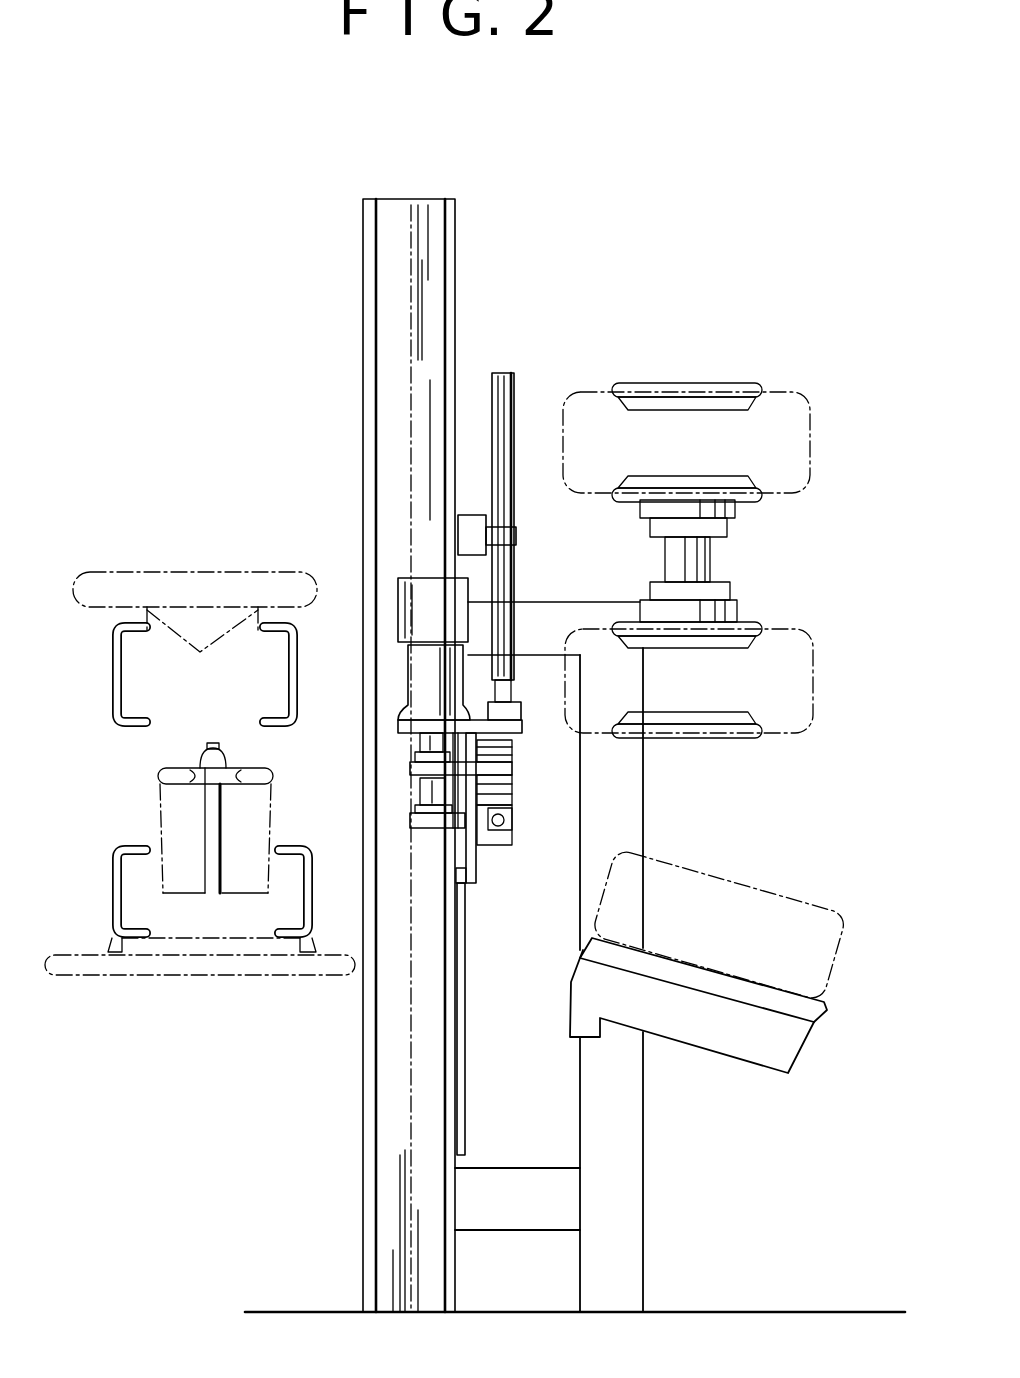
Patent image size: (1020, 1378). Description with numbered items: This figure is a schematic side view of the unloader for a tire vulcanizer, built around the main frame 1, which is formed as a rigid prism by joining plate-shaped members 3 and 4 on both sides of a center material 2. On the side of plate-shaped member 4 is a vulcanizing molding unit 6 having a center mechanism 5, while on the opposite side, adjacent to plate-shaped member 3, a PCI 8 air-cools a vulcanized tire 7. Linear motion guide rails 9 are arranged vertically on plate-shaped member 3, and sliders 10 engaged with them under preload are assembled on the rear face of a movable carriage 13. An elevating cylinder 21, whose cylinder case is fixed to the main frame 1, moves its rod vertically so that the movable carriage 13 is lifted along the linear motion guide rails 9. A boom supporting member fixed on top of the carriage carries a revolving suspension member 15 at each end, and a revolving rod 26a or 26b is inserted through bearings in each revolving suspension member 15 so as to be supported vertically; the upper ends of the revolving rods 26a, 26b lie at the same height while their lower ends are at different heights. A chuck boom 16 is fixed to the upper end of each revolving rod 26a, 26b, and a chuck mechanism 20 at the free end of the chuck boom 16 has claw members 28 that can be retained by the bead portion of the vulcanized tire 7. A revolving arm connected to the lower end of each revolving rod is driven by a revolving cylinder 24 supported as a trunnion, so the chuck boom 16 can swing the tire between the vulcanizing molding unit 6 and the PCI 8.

The main frame 1 is at (421, 729).
The center material 2 is at (413, 245).
The plate-shaped member 3 is at (452, 273).
The plate-shaped member 4 is at (368, 273).
The center mechanism 5 is at (218, 838).
The vulcanizing molding unit 6 is at (117, 838).
The vulcanized tire 7 is at (800, 461).
The PCI 8 is at (743, 383).
The linear motion guide rail 9 is at (466, 1118).
The slider 10 is at (456, 877).
The movable carriage 13 is at (476, 862).
The revolving suspension member 15 is at (418, 676).
The chuck boom 16 is at (416, 576).
The chuck mechanism 20 is at (160, 572).
The elevating cylinder 21 is at (518, 381).
The revolving cylinder 24 is at (500, 782).
The revolving rod 26a is at (420, 797).
The revolving rod 26b is at (422, 750).
The claw member 28 is at (202, 647).